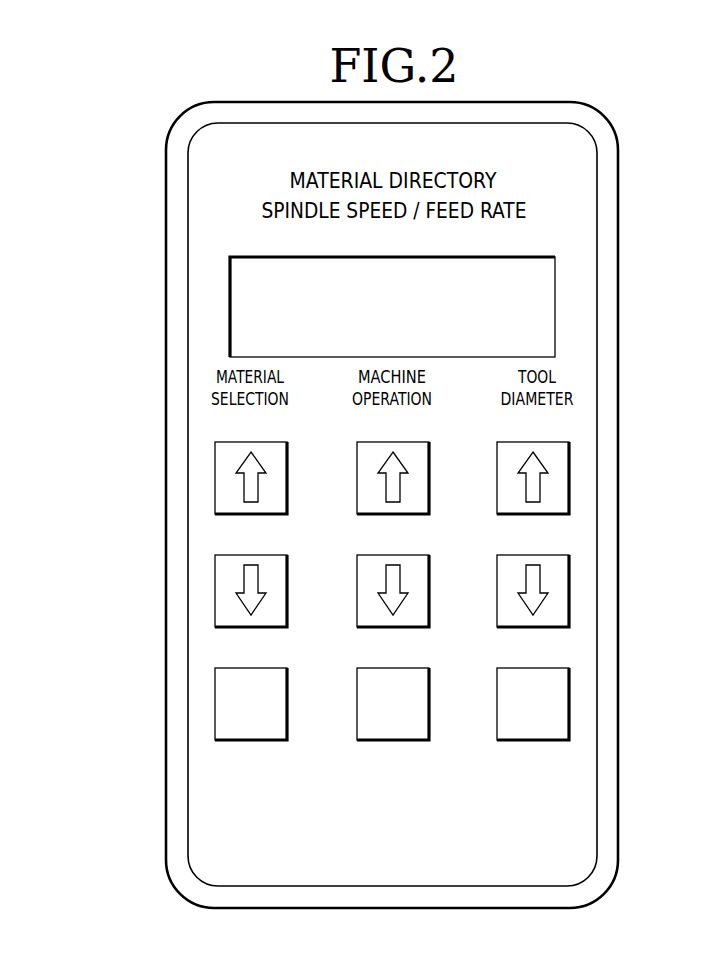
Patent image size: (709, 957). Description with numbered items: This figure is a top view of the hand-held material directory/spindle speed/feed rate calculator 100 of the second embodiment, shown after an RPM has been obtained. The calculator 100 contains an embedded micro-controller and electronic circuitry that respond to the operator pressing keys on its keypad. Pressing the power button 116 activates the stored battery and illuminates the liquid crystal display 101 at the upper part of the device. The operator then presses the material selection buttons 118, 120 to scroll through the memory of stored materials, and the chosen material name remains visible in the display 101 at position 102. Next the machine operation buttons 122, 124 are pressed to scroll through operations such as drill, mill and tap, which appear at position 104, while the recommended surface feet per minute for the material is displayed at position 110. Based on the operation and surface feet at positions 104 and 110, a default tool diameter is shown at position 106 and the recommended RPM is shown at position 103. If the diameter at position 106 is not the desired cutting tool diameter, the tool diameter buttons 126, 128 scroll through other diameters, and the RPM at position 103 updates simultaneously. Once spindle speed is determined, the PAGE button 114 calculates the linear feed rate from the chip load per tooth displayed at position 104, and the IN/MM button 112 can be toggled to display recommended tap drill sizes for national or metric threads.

The calculator 100 is at (160, 557).
The display 101 is at (560, 268).
The material position 102 is at (248, 332).
The RPM position 103 is at (528, 290).
The machine operation position 104 is at (420, 339).
The tool diameter position 106 is at (548, 347).
The SFM position 110 is at (272, 290).
The IN/MM button 112 is at (252, 743).
The PAGE button 114 is at (392, 745).
The power button 116 is at (533, 745).
The material selection up button 118 is at (290, 478).
The material selection down button 120 is at (290, 591).
The machine operation up button 122 is at (432, 478).
The machine operation down button 124 is at (432, 591).
The tool diameter up button 126 is at (572, 483).
The tool diameter down button 128 is at (571, 572).